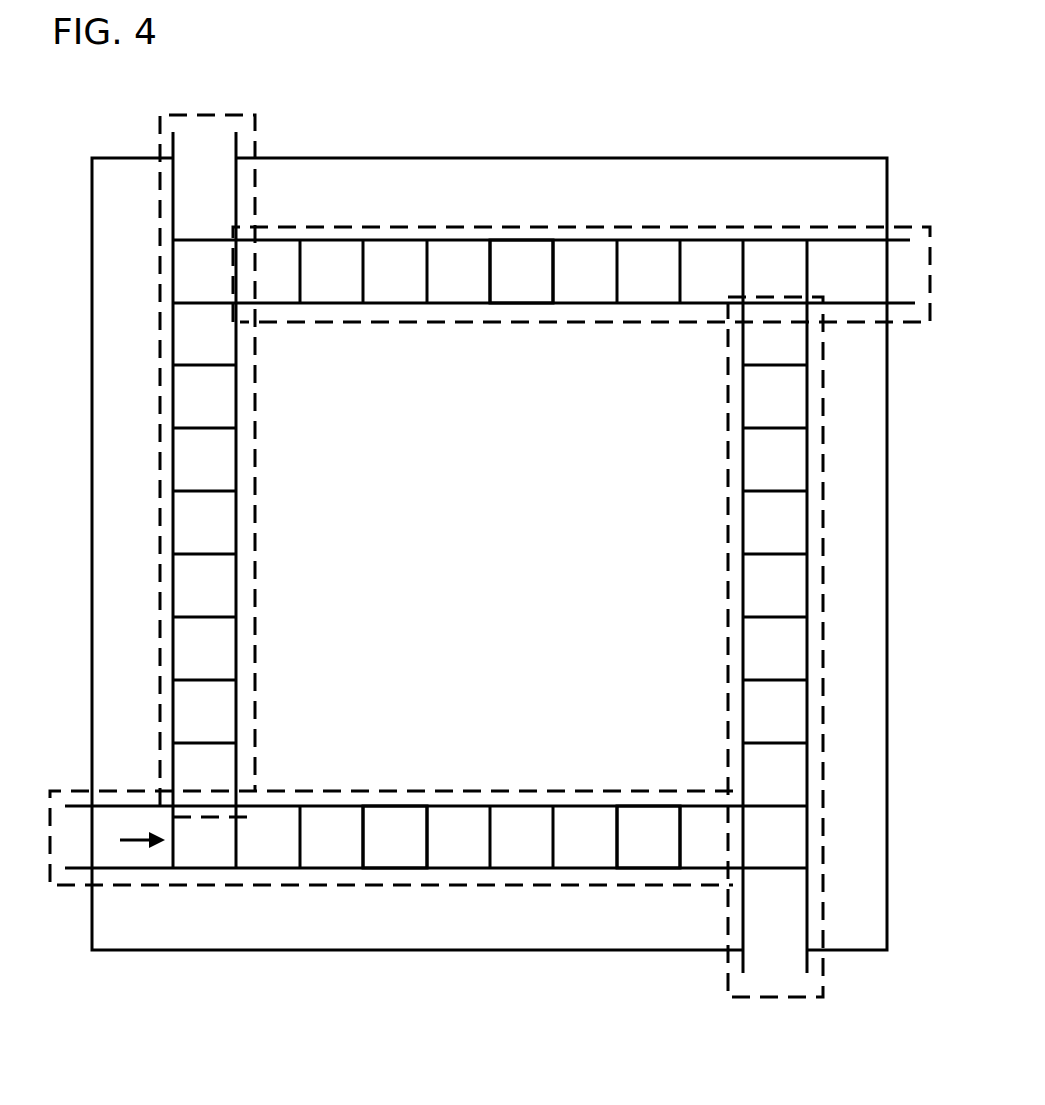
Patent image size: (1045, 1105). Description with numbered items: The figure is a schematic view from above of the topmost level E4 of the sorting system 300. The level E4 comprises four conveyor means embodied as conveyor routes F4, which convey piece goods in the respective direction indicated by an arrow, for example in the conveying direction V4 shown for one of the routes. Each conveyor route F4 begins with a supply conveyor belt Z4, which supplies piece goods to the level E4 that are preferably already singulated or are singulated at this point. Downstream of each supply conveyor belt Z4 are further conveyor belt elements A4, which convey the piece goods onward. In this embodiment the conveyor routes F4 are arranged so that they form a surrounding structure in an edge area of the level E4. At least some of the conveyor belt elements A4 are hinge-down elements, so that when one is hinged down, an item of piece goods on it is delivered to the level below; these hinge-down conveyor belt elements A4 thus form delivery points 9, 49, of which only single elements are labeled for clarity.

The sorting system 300 is at (909, 105).
The topmost level E4 is at (333, 108).
The conveyor route F4 is at (648, 226).
The conveyor belt element A4 is at (490, 552).
The delivery point 9 is at (485, 372).
The hinge-down delivery point 49 is at (510, 554).
The supply conveyor belt Z4 is at (203, 132).
The conveying direction V4 is at (130, 838).